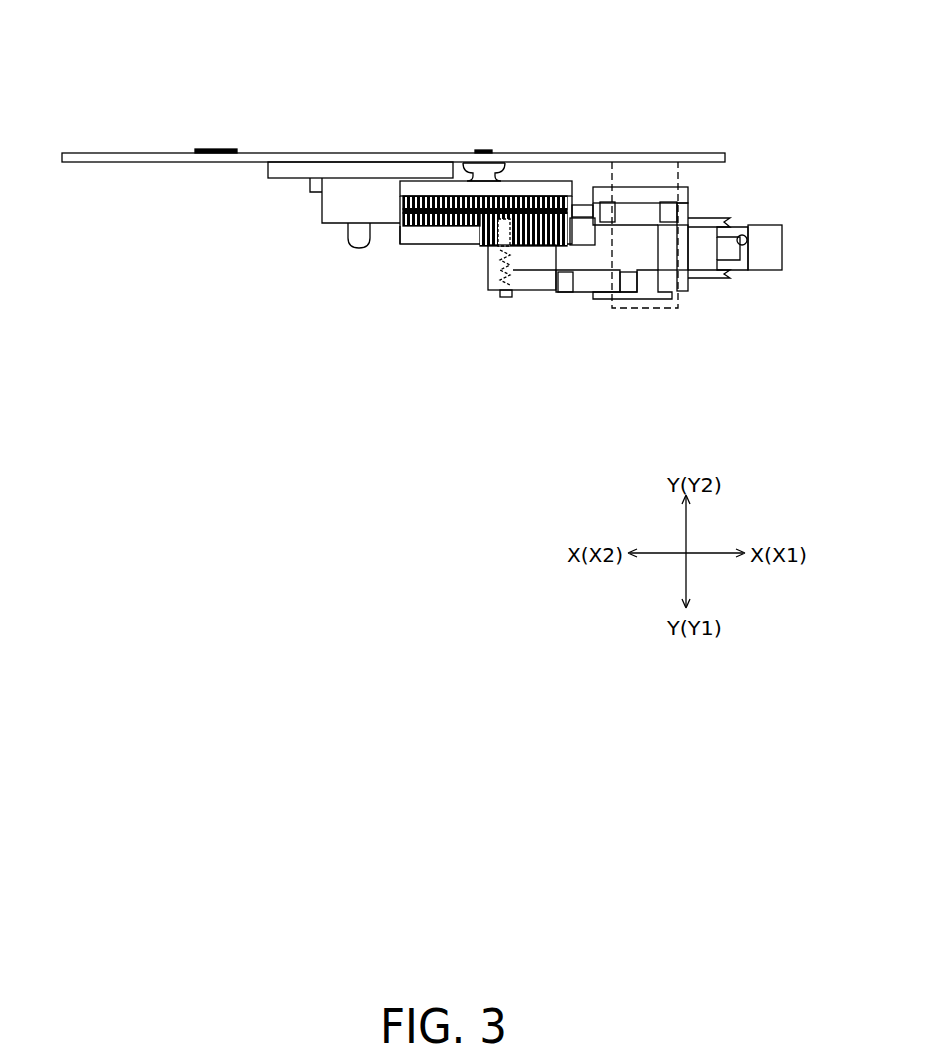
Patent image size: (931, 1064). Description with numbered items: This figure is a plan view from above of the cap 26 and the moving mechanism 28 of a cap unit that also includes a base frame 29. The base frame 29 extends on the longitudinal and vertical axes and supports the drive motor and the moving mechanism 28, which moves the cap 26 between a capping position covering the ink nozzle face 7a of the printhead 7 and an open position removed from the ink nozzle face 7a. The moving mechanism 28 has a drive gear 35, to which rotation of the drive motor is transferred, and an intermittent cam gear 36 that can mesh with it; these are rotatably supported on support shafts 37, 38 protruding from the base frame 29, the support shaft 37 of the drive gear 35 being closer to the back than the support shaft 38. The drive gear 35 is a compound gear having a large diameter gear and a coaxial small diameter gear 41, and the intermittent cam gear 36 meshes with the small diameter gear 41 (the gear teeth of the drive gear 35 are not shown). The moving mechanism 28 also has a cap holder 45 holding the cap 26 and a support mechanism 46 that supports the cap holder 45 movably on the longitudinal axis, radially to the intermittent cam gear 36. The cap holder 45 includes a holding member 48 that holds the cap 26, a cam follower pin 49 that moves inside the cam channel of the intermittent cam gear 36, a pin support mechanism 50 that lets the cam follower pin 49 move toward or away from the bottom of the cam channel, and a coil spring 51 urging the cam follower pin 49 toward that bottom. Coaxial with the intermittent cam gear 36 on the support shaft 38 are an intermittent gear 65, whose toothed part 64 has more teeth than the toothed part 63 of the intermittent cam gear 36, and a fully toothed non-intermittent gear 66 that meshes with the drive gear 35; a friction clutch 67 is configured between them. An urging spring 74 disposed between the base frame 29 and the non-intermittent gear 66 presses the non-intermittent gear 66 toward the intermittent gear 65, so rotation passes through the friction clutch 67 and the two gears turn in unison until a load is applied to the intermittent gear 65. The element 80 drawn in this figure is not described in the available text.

The printhead 7 is at (773, 219).
The ink nozzle face 7a is at (740, 240).
The cap 26 is at (730, 253).
The moving mechanism 28 is at (585, 171).
The base frame 29 is at (135, 155).
The drive gear 35 is at (332, 83).
The intermittent cam gear 36 is at (398, 242).
The support shaft 37 is at (350, 237).
The support shaft 38 is at (507, 167).
The small diameter gear 41 is at (342, 193).
The cap holder 45 is at (597, 273).
The support mechanism 46 is at (658, 176).
The holding member 48 is at (708, 253).
The cam follower pin 49 is at (507, 297).
The pin support mechanism 50 is at (488, 276).
The coil spring 51 is at (520, 280).
The toothed part 63 is at (415, 223).
The toothed part 64 is at (458, 203).
The intermittent gear 65 is at (425, 203).
The non-intermittent gear 66 is at (452, 190).
The friction clutch 67 is at (400, 208).
The urging spring 74 is at (470, 175).
The plate portion 80 is at (297, 168).